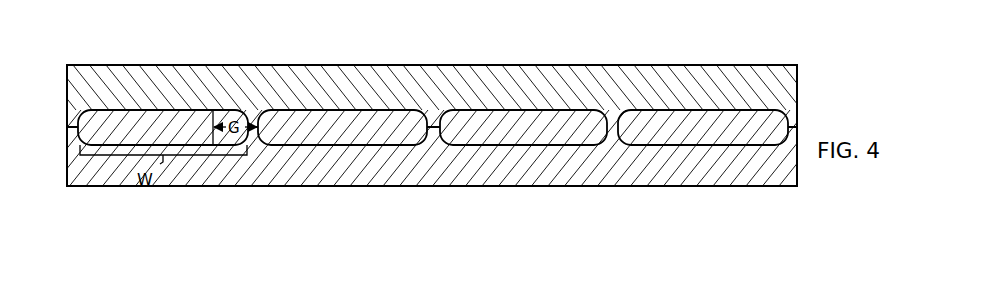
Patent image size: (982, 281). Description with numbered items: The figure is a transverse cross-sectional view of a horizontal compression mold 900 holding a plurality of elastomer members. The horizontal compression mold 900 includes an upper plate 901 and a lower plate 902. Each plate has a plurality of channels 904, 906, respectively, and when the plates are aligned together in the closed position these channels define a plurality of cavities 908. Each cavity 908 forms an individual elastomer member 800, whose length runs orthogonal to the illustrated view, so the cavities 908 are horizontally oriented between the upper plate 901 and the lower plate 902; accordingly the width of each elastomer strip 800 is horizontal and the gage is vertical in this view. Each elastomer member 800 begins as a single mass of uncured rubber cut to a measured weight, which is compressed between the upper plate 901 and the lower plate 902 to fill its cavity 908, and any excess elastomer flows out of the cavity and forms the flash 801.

The horizontal compression mold 900 is at (300, 204).
The upper plate 901 is at (315, 77).
The lower plate 902 is at (429, 177).
The elastomer member 800 is at (477, 118).
The flash 801 is at (255, 127).
The channels of the upper plate 904 is at (665, 108).
The channels of the lower plate 906 is at (663, 145).
The cavity 908 is at (88, 120).